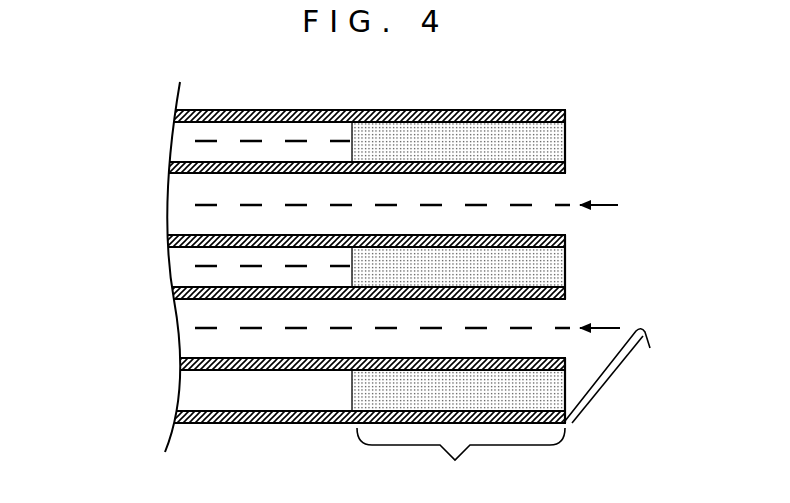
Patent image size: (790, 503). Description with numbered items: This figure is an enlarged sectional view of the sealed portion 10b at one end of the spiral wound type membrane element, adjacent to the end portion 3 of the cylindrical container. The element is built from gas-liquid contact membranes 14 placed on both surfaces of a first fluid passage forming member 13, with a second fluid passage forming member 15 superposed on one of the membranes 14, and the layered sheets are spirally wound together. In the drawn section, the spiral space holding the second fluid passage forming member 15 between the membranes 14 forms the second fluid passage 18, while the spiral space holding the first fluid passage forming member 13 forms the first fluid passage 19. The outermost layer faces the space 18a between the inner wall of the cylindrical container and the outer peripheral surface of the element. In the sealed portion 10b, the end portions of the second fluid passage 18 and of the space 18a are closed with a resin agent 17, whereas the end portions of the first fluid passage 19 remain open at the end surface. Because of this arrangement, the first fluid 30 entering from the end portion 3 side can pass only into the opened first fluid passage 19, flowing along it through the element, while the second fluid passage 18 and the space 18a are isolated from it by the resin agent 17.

The end portion 3 is at (612, 373).
The sealed portion 10b is at (461, 459).
The first fluid passage forming member 13 is at (197, 205).
The gas-liquid contact membrane 14 is at (283, 110).
The second fluid passage forming member 15 is at (197, 141).
The resin agent 17 is at (555, 140).
The second fluid passage 18 is at (175, 147).
The space 18a is at (207, 392).
The first fluid passage 19 is at (552, 190).
The first fluid 30 is at (608, 208).